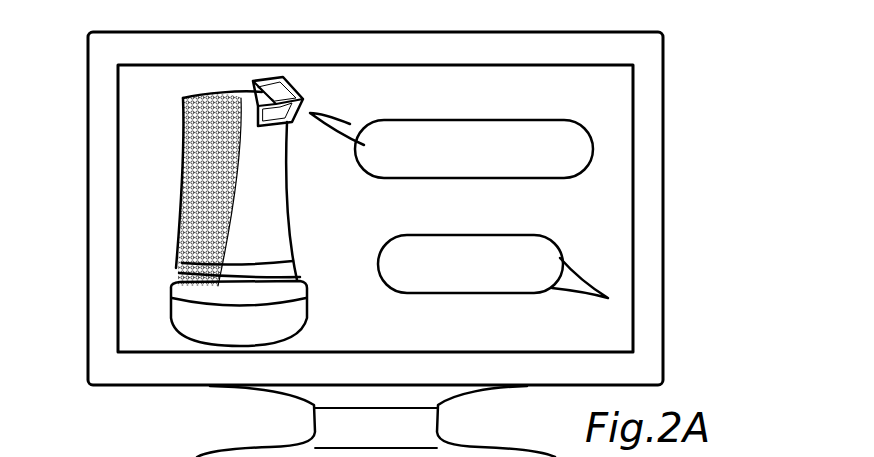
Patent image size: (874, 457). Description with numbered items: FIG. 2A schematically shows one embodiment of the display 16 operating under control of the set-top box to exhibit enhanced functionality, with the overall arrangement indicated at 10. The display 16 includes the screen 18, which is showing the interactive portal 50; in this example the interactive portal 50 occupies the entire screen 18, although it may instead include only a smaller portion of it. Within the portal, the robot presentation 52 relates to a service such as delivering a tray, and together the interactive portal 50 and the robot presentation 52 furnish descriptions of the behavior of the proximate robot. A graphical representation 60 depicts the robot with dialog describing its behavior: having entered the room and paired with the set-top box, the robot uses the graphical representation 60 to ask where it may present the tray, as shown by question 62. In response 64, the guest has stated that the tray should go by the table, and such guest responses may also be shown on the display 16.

The robot control system 10 is at (381, 244).
The display 16 is at (668, 212).
The screen 18 is at (128, 212).
The interactive portal 50 is at (215, 211).
The robot presentation 52 is at (160, 86).
The graphical representation 60 is at (287, 190).
The question 62 is at (493, 120).
The response 64 is at (493, 235).